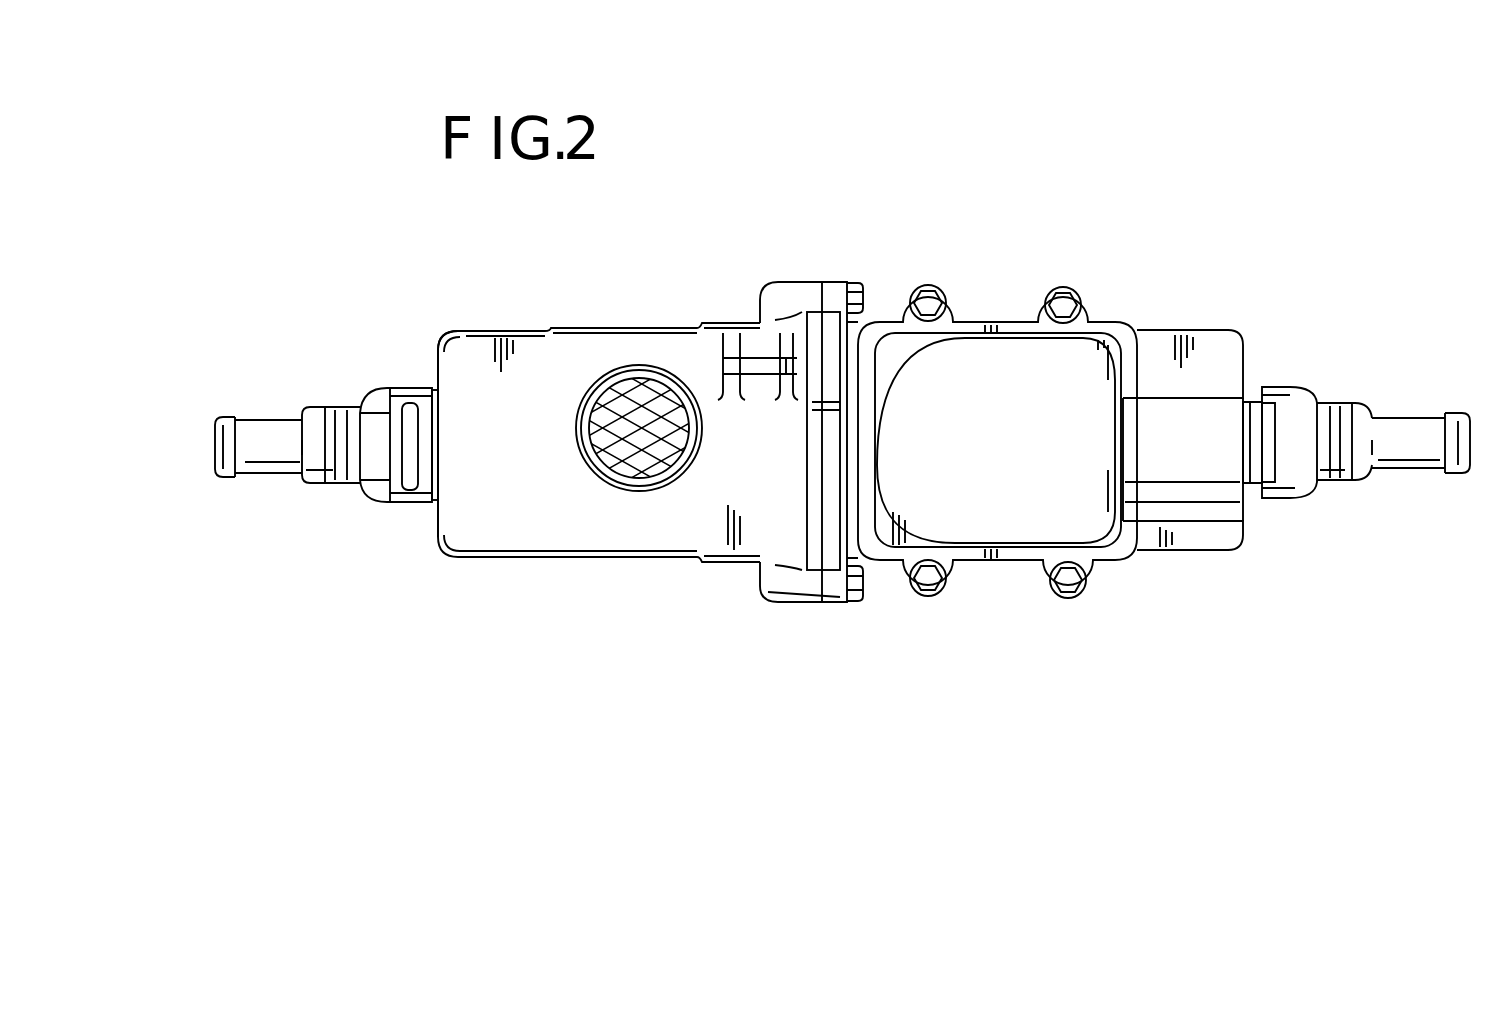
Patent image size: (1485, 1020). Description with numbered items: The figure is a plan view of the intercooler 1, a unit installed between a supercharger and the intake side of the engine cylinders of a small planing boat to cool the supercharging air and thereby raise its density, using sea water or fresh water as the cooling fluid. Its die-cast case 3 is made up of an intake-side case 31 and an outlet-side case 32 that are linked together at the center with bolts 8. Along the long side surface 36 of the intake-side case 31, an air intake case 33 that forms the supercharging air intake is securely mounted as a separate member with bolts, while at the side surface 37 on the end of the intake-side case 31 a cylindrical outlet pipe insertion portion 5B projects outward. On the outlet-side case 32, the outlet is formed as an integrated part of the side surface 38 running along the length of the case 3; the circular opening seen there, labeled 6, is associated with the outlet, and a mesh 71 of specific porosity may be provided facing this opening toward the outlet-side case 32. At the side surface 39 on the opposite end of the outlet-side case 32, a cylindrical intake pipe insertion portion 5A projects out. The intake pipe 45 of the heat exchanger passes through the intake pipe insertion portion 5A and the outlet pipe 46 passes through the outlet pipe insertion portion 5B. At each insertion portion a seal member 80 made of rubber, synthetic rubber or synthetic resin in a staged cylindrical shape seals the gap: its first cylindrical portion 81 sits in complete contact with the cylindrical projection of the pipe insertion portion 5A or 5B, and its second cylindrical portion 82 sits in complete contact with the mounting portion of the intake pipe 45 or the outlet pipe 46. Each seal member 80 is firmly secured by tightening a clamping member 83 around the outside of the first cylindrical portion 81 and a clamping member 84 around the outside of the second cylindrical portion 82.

The intercooler 1 is at (1060, 255).
The case 3 is at (735, 512).
The window 6 is at (650, 458).
The bolts 8 is at (866, 300).
The intake-side case 31 is at (1195, 535).
The outlet-side case 32 is at (522, 357).
The air intake case 33 is at (1040, 520).
The side surface 36 is at (1190, 355).
The side surface 37 is at (1242, 367).
The side surface 38 is at (680, 350).
The side surface 39 is at (432, 362).
The intake pipe 45 is at (283, 466).
The outlet pipe 46 is at (1407, 452).
The intake pipe insertion portion 5A is at (352, 512).
The outlet pipe insertion portion 5B is at (1287, 518).
The mesh 71 is at (637, 437).
The seal member 80 is at (305, 445).
The first cylindrical portion 81 is at (375, 415).
The second cylindrical portion 82 is at (305, 440).
The clamping member 83 is at (420, 492).
The clamping member 84 is at (330, 472).